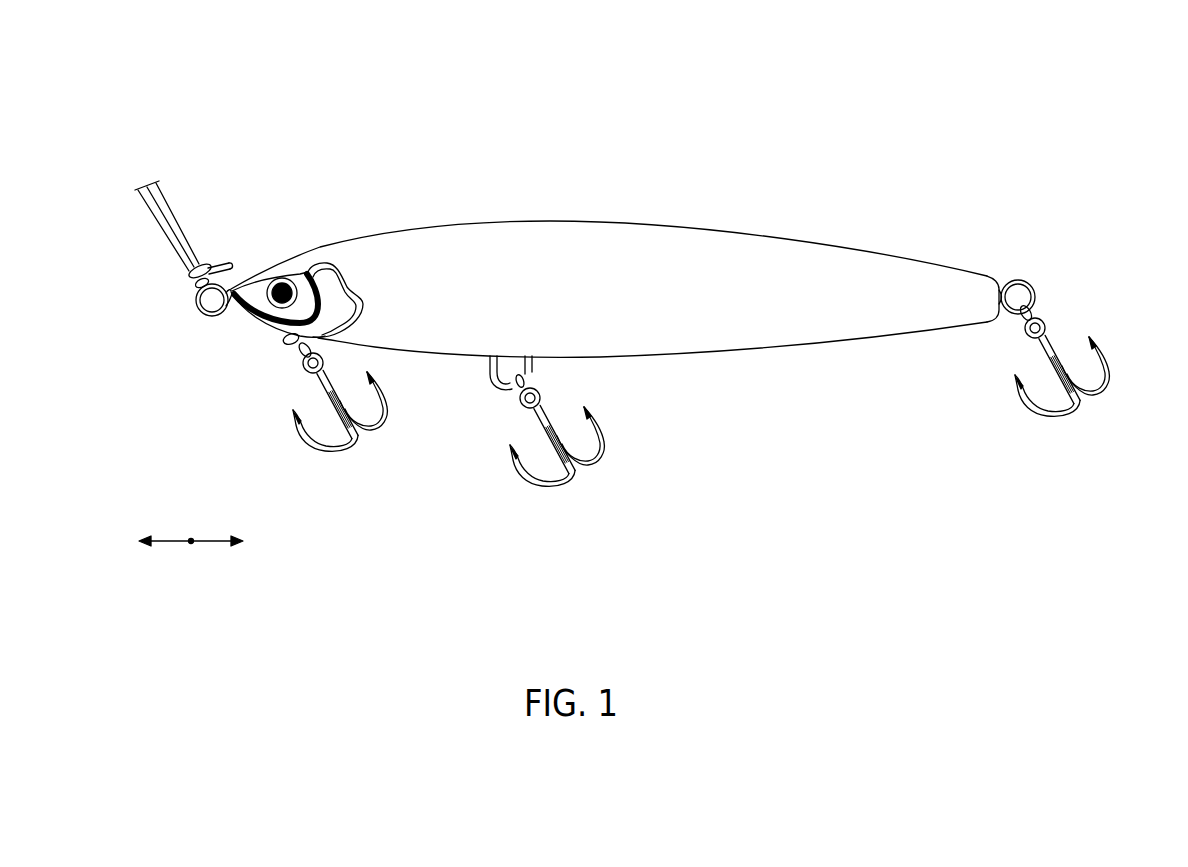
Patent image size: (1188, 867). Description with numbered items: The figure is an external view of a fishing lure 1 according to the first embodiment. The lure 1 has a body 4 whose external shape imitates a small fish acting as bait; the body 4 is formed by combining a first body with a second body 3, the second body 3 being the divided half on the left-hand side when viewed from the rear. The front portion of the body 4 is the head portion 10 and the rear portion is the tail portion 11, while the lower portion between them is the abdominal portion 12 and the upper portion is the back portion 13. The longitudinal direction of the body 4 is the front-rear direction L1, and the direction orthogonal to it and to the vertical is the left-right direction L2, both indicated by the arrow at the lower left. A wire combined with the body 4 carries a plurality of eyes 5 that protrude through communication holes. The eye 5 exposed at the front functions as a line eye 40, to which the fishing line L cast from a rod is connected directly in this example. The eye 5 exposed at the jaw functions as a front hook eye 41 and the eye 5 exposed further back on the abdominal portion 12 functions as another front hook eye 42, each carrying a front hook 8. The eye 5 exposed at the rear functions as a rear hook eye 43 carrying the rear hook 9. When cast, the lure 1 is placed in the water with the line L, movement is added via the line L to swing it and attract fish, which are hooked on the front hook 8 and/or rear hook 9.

The lure 1 is at (950, 126).
The second body 3 is at (628, 288).
The body 4 is at (628, 288).
The eyes 5 is at (664, 393).
The front hook 8 is at (330, 452).
The rear hook 9 is at (1055, 420).
The head portion 10 is at (257, 275).
The tail portion 11 is at (966, 284).
The abdominal portion 12 is at (640, 352).
The back portion 13 is at (553, 232).
The line eye 40 is at (207, 316).
The front hook eye 41 is at (291, 345).
The front hook eye 42 is at (497, 382).
The rear hook eye 43 is at (1036, 296).
The line L is at (177, 230).
The front-rear direction L1 is at (212, 546).
The left-right direction L2 is at (188, 546).